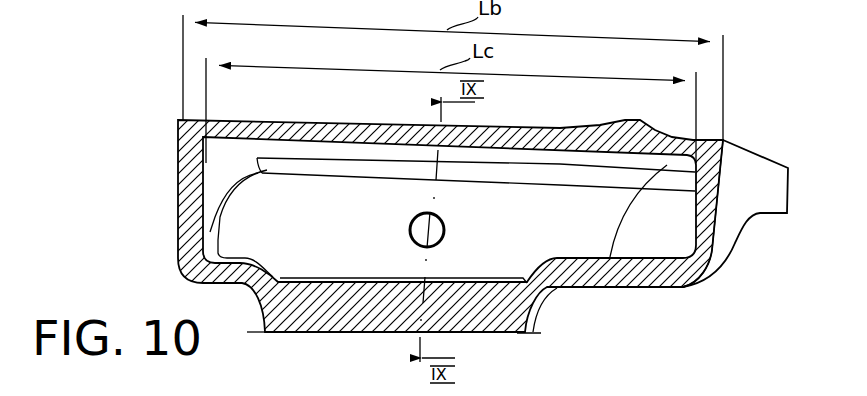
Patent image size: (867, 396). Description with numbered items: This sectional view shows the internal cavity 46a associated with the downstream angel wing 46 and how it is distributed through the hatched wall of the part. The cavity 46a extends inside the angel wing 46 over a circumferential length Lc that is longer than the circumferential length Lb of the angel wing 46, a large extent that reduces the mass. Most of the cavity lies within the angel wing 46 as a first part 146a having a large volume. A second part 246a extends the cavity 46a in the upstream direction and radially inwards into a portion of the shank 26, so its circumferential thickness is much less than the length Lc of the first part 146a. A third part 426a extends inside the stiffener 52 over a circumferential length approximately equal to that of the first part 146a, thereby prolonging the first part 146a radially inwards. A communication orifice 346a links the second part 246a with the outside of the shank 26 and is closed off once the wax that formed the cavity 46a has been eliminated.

The shank 26 is at (322, 315).
The downstream angel wing 46 is at (757, 155).
The internal cavity 46a is at (258, 230).
The stiffener 52 is at (719, 232).
The first part 146a is at (610, 257).
The second part 246a is at (493, 265).
The communication orifice 346a is at (445, 228).
The third part 426a is at (640, 248).